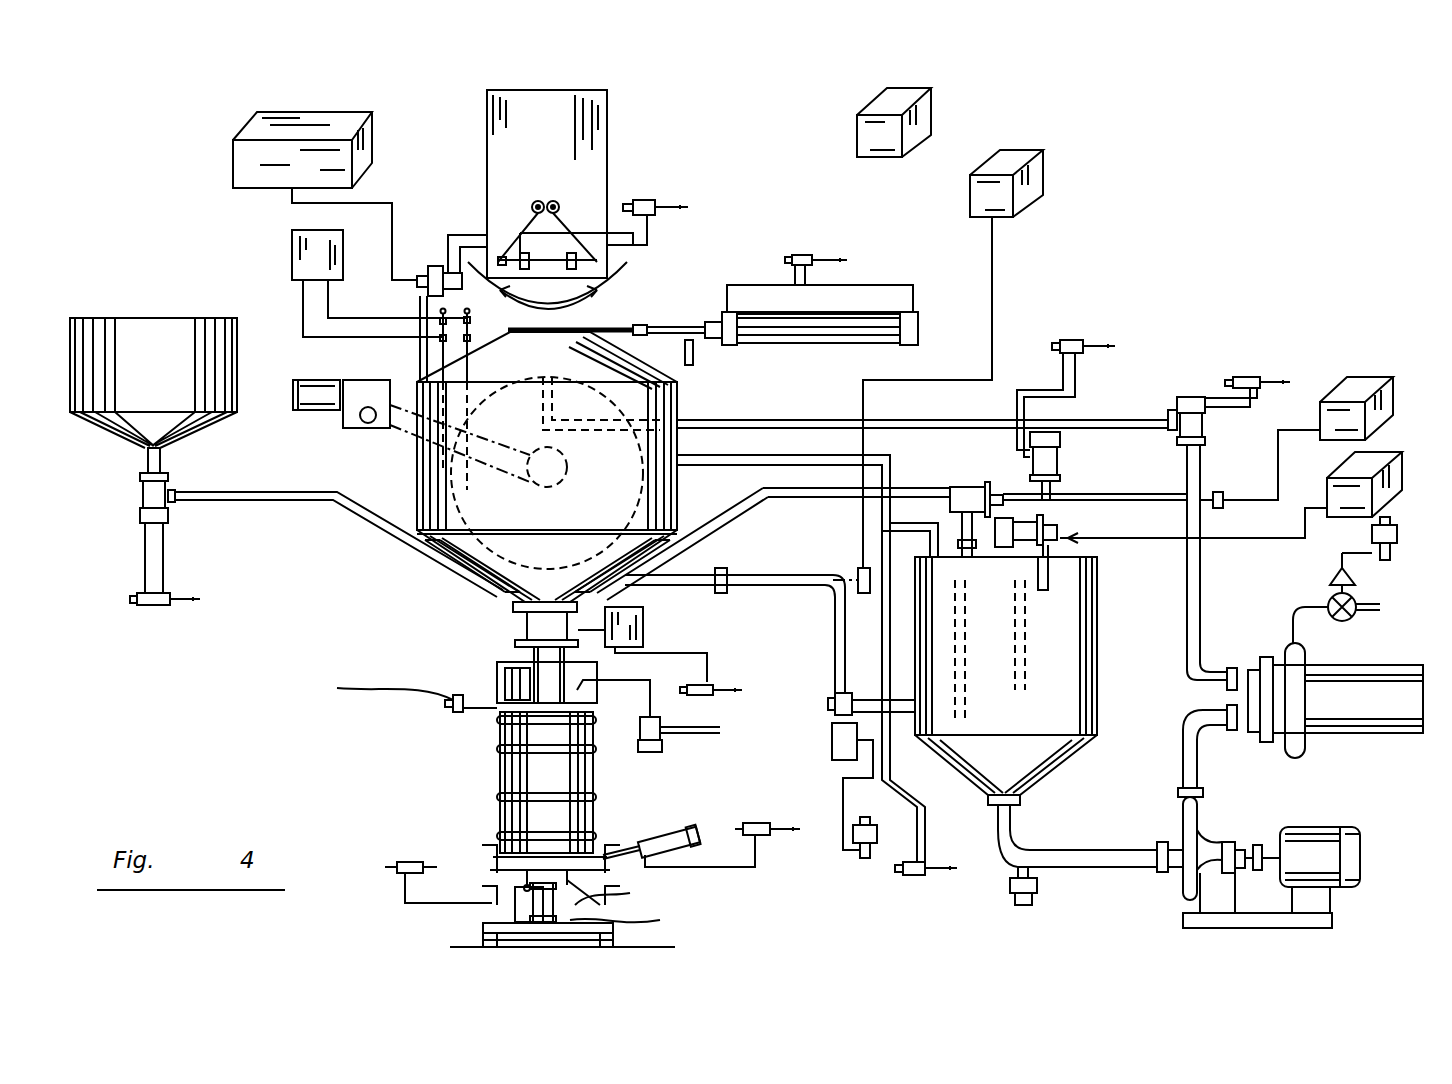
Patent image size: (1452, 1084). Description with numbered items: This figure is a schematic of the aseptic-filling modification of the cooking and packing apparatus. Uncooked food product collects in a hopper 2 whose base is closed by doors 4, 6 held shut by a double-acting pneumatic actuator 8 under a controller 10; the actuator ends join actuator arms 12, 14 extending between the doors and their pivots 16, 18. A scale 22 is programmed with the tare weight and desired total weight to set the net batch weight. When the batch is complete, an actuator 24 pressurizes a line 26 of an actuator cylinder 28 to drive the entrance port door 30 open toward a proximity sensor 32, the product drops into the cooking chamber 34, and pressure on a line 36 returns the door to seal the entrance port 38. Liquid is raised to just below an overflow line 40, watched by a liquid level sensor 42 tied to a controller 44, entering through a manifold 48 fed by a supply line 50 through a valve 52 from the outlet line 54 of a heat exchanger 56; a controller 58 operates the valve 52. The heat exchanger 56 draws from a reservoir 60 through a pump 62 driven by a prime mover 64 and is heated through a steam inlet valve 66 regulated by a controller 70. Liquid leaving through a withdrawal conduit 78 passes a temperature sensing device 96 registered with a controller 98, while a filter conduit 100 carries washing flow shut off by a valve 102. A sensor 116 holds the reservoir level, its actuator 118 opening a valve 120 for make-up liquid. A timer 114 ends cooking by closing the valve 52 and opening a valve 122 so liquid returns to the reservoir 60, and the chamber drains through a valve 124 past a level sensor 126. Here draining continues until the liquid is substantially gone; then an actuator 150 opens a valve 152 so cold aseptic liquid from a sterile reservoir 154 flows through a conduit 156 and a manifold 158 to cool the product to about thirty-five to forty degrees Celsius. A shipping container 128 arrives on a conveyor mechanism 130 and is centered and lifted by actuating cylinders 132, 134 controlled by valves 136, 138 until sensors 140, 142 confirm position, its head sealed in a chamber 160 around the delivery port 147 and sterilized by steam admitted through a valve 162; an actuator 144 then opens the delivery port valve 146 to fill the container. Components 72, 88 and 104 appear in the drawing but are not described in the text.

The hopper 2 is at (607, 100).
The door 4 is at (598, 282).
The door 6 is at (492, 300).
The actuator 8 is at (547, 267).
The controller 10 is at (643, 200).
The actuator arm 12 is at (570, 238).
The actuator arm 14 is at (522, 225).
The pivot 16 is at (560, 200).
The pivot 18 is at (533, 203).
The scale 22 is at (318, 122).
The actuator 24 is at (800, 255).
The line 26 is at (724, 285).
The actuator cylinder 28 is at (805, 345).
The cooking chamber entrance port door 30 is at (633, 328).
The door open position proximity sensor 32 is at (693, 355).
The cooking chamber 34 is at (677, 405).
The line 36 is at (870, 285).
The entrance port 38 is at (534, 336).
The overflow line 40 is at (728, 457).
The liquid level sensor 42 is at (462, 362).
The controller 44 is at (292, 242).
The manifold 48 is at (705, 552).
The supply line 50 is at (840, 497).
The valve 52 is at (1062, 464).
The outlet line 54 is at (1200, 572).
The heat exchanger 56 is at (1345, 733).
The controller 58 is at (1075, 340).
The reservoir 60 is at (1097, 693).
The pump 62 is at (1205, 835).
The prime mover 64 is at (1385, 560).
The inlet valve 66 is at (1352, 618).
The controller 70 is at (1220, 490).
The control unit 72 is at (1348, 380).
The withdrawal conduit 78 is at (740, 592).
The motor 88 is at (352, 430).
The temperature sensing device 96 is at (855, 590).
The controller 98 is at (1045, 165).
The filter conduit 100 is at (790, 420).
The valve 102 is at (1195, 397).
The valve 104 is at (1252, 377).
The timer 114 is at (927, 100).
The sensor 116 is at (1100, 553).
The actuator 118 is at (925, 880).
The valve 120 is at (1068, 525).
The valve 122 is at (965, 487).
The valve 124 is at (835, 705).
The sensor 126 is at (422, 352).
The shipping container 128 is at (500, 778).
The conveyor mechanism 130 is at (547, 879).
The actuating cylinder 132 is at (550, 902).
The actuating cylinder 134 is at (672, 832).
The valve 136 is at (400, 878).
The valve 138 is at (770, 840).
The sensor 140 is at (455, 712).
The sensor 142 is at (628, 902).
The actuator 144 is at (708, 685).
The valve 146 is at (645, 620).
The delivery port 147 is at (527, 628).
The actuator 150 is at (160, 605).
The valve 152 is at (143, 495).
The sterile reservoir 154 is at (170, 318).
The conduit 156 is at (322, 503).
The manifold 158 is at (450, 587).
The chamber 160 is at (497, 668).
The valve 162 is at (665, 745).